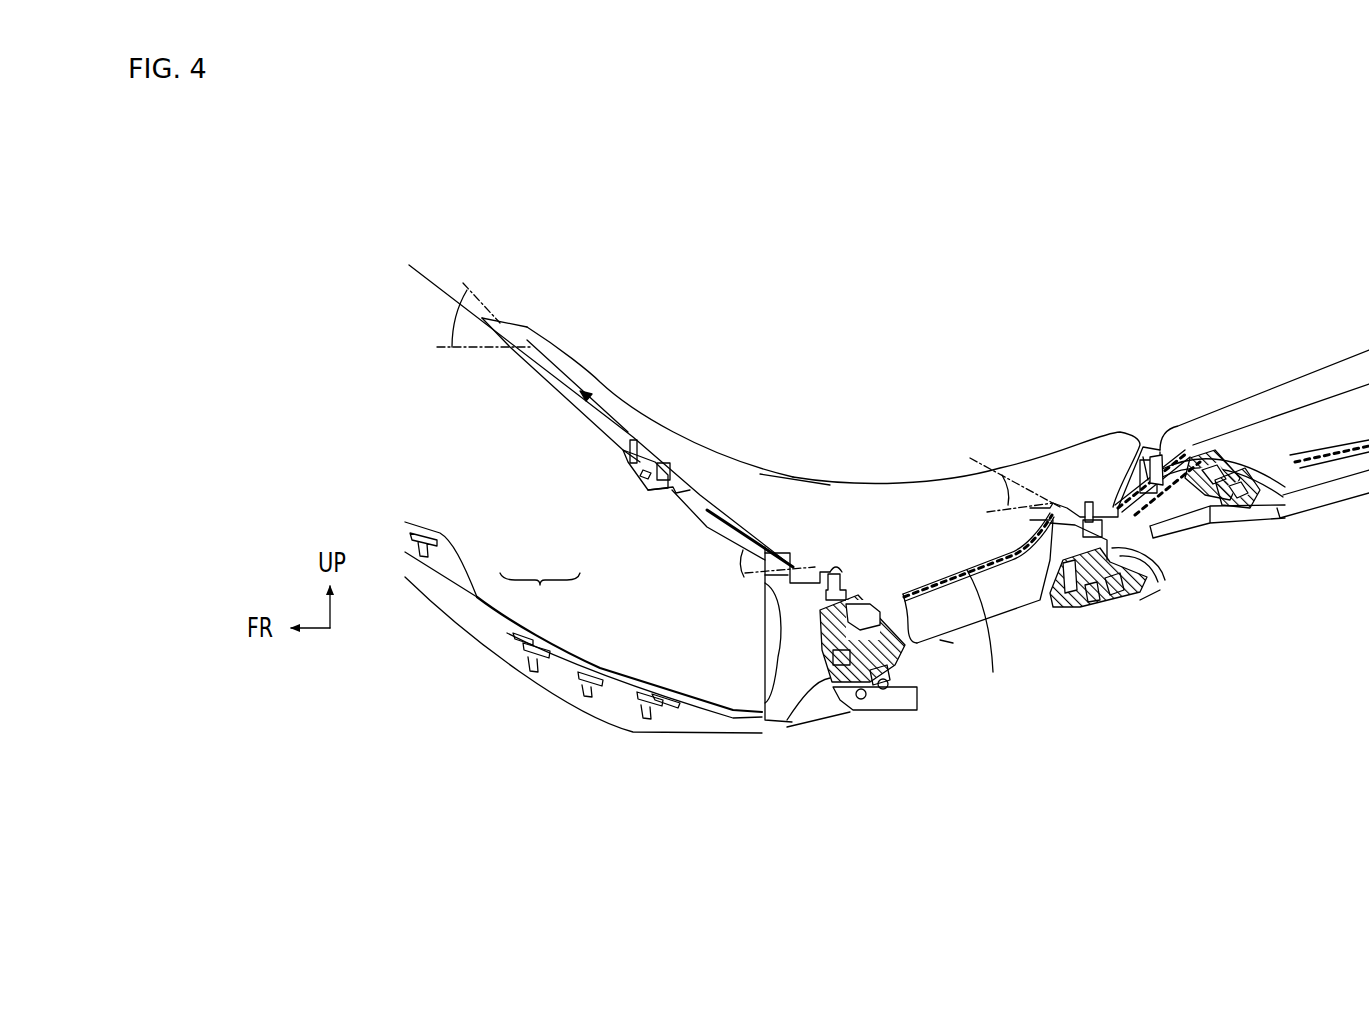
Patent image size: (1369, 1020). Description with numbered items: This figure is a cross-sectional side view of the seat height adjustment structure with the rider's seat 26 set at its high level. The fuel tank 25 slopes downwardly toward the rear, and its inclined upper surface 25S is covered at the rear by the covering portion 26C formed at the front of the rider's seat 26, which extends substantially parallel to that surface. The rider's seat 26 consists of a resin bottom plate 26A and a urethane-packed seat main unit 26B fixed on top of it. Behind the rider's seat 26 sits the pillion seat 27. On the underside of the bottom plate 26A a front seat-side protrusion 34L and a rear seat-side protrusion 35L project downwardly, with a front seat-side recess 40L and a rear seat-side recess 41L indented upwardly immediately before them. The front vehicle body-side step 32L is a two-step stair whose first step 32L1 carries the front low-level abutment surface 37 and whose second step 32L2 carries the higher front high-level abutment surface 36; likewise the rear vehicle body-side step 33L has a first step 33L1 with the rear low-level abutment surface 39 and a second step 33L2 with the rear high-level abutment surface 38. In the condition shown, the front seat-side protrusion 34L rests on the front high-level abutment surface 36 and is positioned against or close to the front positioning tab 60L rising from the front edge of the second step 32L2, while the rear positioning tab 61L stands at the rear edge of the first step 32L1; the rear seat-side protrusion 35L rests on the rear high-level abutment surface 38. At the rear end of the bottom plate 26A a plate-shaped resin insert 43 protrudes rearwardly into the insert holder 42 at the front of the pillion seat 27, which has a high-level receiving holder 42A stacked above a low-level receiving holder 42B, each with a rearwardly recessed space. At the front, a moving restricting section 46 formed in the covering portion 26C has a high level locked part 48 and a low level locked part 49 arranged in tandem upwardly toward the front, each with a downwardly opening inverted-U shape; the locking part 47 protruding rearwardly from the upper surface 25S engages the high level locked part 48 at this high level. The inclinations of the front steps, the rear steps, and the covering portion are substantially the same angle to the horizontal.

The fuel tank 25 is at (441, 300).
The upper surface of the fuel tank 25S is at (550, 383).
The rider's seat 26 is at (943, 470).
The bottom plate 26A is at (570, 387).
The seat main unit 26B is at (790, 470).
The covering portion 26C is at (600, 382).
The pillion seat 27 is at (1290, 375).
The front vehicle body-side step 32L is at (813, 672).
The first step 32L1 is at (867, 660).
The second step 32L2 is at (837, 640).
The rear vehicle body-side step 33L is at (1092, 600).
The first step 33L1 is at (1110, 600).
The second step 33L2 is at (1102, 605).
The front seat-side protrusion 34L is at (823, 597).
The rear seat-side protrusion 35L is at (1137, 527).
The front high-level abutment surface 36 is at (852, 573).
The front low-level abutment surface 37 is at (868, 622).
The rear high-level abutment surface 38 is at (1087, 500).
The rear low-level abutment surface 39 is at (1147, 593).
The front seat-side recess 40L is at (803, 567).
The rear seat-side recess 41L is at (1083, 503).
The insert holder 42 is at (1178, 448).
The high-level receiving holder 42A is at (1198, 466).
The low-level receiving holder 42B is at (1223, 507).
The insert 43 is at (1167, 473).
The moving restricting section 46 is at (540, 592).
The locking part 47 is at (670, 467).
The high level locked part 48 is at (650, 488).
The low level locked part 49 is at (620, 453).
The front positioning tab 60L is at (835, 625).
The rear positioning tab 61L is at (885, 645).